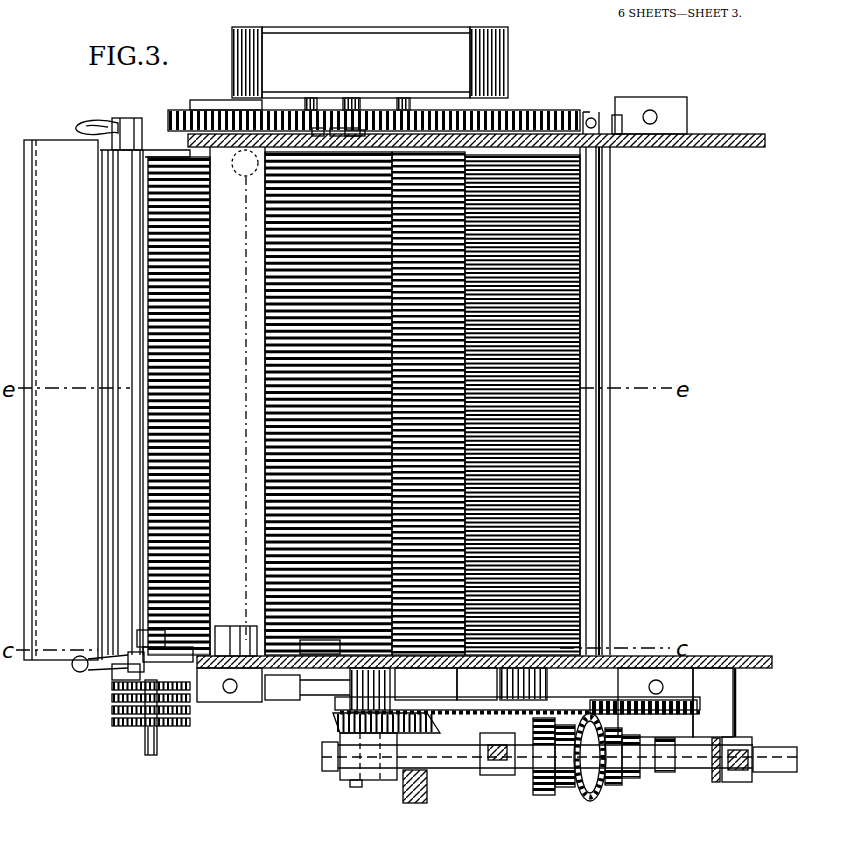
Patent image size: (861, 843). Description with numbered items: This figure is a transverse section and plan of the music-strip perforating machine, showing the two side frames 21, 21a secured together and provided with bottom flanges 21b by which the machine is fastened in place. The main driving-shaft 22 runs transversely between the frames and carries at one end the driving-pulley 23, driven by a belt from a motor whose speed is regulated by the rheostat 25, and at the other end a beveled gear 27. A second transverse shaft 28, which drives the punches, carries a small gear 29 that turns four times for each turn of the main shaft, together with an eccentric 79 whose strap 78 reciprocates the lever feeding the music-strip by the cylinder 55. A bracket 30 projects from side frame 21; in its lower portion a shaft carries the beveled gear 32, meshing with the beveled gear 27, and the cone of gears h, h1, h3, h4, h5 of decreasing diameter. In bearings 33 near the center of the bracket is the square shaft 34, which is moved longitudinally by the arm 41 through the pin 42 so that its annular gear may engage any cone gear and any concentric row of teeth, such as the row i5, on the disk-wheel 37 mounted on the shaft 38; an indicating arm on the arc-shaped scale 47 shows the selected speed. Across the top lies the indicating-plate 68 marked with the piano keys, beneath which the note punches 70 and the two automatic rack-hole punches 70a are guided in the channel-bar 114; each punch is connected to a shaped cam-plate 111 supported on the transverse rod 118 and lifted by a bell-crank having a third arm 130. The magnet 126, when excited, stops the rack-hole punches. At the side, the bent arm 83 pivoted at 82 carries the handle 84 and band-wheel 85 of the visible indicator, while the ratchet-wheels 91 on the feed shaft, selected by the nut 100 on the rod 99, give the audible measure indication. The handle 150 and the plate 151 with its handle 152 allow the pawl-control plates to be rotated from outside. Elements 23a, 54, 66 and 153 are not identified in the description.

The side frame 21 is at (755, 660).
The side frame 21a is at (720, 148).
The flange 21b is at (746, 710).
The main driving-shaft 22 is at (350, 704).
The driving-pulley 23 is at (362, 96).
The collar 23a is at (718, 785).
The rheostat 25 is at (590, 803).
The beveled gear 27 is at (340, 752).
The shaft 28 is at (339, 132).
The small gear 29 is at (320, 130).
The bracket 30 is at (735, 785).
The beveled gear 32 is at (412, 804).
The bearing 33 is at (490, 777).
The square shaft 34 is at (773, 765).
The disk-wheel 37 is at (620, 712).
The shaft 38 is at (512, 145).
The arm 41 is at (342, 772).
The pin 42 is at (356, 788).
The arc-shaped scale 47 is at (285, 700).
The lever 54 is at (106, 842).
The cylinder 55 is at (208, 833).
The link 66 is at (148, 833).
The indicating-plate 68 is at (95, 263).
The punch 70 is at (159, 402).
The punch 70a is at (160, 155).
The strap 78 is at (310, 646).
The eccentric 79 is at (352, 135).
The pivot 82 is at (223, 688).
The bent arm 83 is at (150, 643).
The handle 84 is at (82, 658).
The band-wheel 85 is at (110, 677).
The ratchet-wheel 91 is at (113, 702).
The rod 99 is at (150, 756).
The nut 100 is at (125, 723).
The shaped cam-plate 111 is at (328, 403).
The channel-bar 114 is at (237, 401).
The rod 118 is at (400, 670).
The magnet 126 is at (237, 178).
The arm 130 is at (428, 403).
The handle 150 is at (97, 125).
The plate 151 is at (612, 318).
The handle 152 is at (593, 117).
The card stack 153 is at (522, 405).
The gear h is at (542, 797).
The gear h1 is at (562, 790).
The gear h3 is at (612, 788).
The gear h4 is at (631, 780).
The gear h5 is at (660, 775).
The row of gear-teeth i5 is at (620, 708).